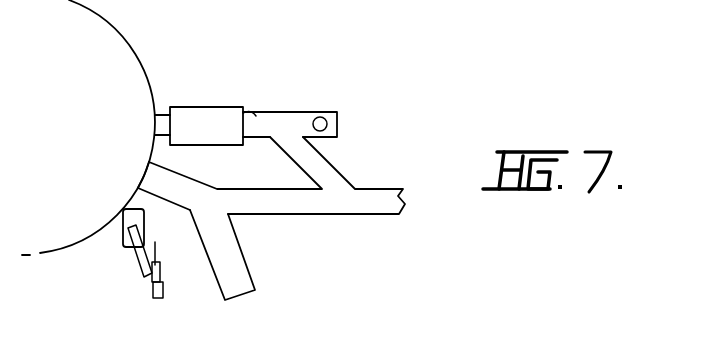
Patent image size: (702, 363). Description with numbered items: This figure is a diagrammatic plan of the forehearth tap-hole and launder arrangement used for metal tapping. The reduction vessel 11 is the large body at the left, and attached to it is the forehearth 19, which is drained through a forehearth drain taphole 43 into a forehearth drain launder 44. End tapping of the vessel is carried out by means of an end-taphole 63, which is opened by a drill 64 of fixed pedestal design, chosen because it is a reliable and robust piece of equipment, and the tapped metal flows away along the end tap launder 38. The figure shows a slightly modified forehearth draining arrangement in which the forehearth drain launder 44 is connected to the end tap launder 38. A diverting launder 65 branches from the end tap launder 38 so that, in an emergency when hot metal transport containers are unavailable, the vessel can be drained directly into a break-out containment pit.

The reduction vessel 11 is at (138, 58).
The forehearth 19 is at (210, 118).
The end tap launder 38 is at (273, 205).
The forehearth drain taphole 43 is at (255, 115).
The forehearth drain launder 44 is at (298, 118).
The end-taphole 63 is at (143, 177).
The drill 64 is at (153, 297).
The diverting launder 65 is at (243, 282).